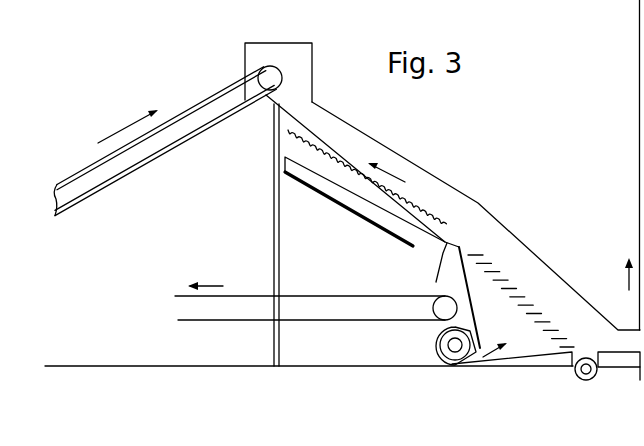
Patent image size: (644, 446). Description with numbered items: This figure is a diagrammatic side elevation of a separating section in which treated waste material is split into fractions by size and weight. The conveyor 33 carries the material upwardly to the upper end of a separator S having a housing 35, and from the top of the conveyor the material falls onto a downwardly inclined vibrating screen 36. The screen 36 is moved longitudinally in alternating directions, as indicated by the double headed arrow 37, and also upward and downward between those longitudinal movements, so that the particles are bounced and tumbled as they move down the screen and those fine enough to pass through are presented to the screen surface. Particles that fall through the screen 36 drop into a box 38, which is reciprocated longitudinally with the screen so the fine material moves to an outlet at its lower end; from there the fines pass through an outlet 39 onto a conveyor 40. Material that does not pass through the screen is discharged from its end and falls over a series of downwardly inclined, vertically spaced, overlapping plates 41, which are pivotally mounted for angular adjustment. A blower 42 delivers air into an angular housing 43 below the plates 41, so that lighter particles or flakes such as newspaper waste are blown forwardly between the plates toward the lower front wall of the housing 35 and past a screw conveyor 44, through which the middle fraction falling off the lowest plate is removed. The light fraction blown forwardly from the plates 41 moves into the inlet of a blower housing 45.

The separator S is at (388, 146).
The conveyor 33 is at (202, 101).
The housing 35 is at (478, 201).
The vibrating screen 36 is at (338, 150).
The double headed arrow 37 is at (397, 172).
The box 38 is at (368, 220).
The outlet 39 is at (411, 284).
The conveyor 40 is at (288, 294).
The plates 41 is at (530, 300).
The blower 42 is at (437, 346).
The angular housing 43 is at (492, 317).
The screw conveyor 44 is at (593, 377).
The blower housing 45 is at (625, 290).